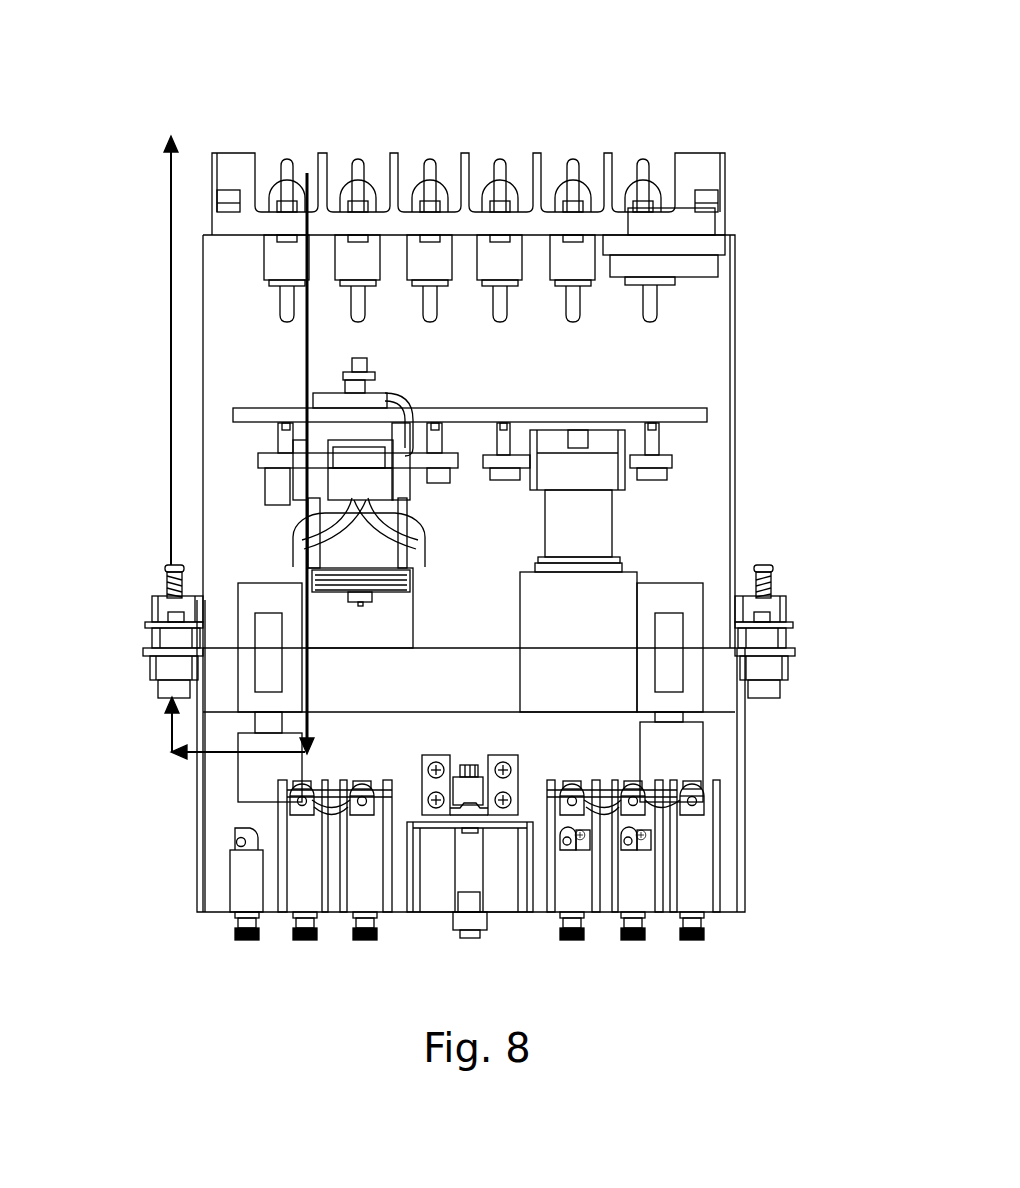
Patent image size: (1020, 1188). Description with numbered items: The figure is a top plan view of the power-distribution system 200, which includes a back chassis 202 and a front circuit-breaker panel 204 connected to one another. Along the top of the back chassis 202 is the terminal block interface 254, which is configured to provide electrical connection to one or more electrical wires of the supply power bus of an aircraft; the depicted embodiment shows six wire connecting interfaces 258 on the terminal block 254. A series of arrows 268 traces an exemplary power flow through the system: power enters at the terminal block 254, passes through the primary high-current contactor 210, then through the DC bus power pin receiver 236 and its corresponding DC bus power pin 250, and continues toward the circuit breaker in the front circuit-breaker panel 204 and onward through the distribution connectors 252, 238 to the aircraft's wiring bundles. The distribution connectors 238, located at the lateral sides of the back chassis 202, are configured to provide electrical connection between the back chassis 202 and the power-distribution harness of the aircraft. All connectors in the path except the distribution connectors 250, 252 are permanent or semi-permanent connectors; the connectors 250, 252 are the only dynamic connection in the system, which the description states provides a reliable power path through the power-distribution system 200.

The power-distribution system 200 is at (732, 105).
The back chassis 202 is at (740, 463).
The front circuit-breaker panel 204 is at (746, 808).
The primary high-current contactor 210 is at (343, 625).
The DC bus power pin receiver 236 is at (684, 597).
The distribution connectors 238 is at (145, 625).
The DC bus power pin 250 is at (690, 722).
The distribution connectors 252 is at (150, 668).
The terminal block interface 254 is at (373, 145).
The wire connecting interfaces 258 is at (503, 147).
The arrows 268 is at (150, 481).